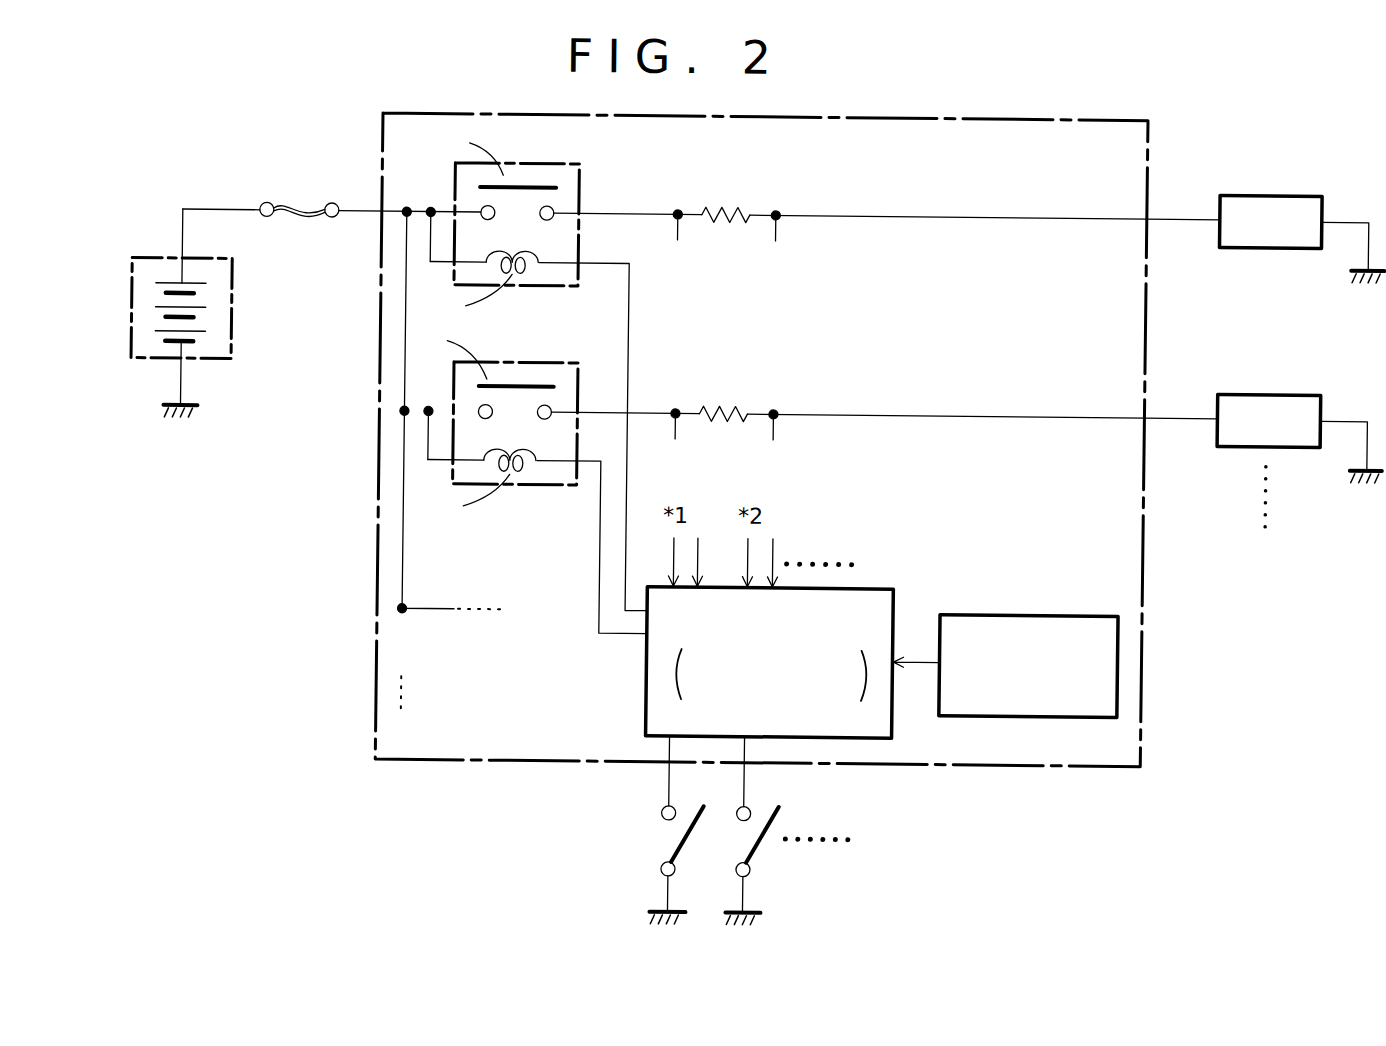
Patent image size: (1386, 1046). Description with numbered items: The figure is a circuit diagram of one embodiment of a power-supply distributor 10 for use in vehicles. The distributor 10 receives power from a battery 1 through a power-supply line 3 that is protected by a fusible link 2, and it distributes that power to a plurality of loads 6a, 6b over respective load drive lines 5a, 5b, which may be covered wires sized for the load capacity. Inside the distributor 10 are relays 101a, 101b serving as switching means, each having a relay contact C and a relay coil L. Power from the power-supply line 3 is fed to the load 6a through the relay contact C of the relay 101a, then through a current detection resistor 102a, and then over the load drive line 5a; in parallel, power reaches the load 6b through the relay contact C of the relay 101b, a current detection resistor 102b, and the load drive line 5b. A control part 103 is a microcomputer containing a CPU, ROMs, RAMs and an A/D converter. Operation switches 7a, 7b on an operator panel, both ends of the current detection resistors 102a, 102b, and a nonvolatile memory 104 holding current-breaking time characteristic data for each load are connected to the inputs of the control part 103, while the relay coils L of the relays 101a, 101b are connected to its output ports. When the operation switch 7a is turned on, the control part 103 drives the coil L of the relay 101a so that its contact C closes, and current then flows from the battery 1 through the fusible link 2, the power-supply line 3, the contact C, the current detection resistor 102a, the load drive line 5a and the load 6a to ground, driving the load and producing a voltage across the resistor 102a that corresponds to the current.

The battery 1 is at (237, 345).
The fusible link 2 is at (300, 197).
The power-supply line 3 is at (358, 209).
The power-supply distributor 10 is at (956, 110).
The relay 101a is at (534, 161).
The relay 101b is at (510, 360).
The current detection resistor 102a is at (729, 203).
The current detection resistor 102b is at (729, 402).
The control part 103 is at (877, 581).
The nonvolatile memory 104 is at (1009, 607).
The load drive line 5a is at (1171, 210).
The load drive line 5b is at (1171, 409).
The load 6a is at (1259, 184).
The load 6b is at (1259, 384).
The operation switch 7a is at (674, 832).
The operation switch 7b is at (749, 838).